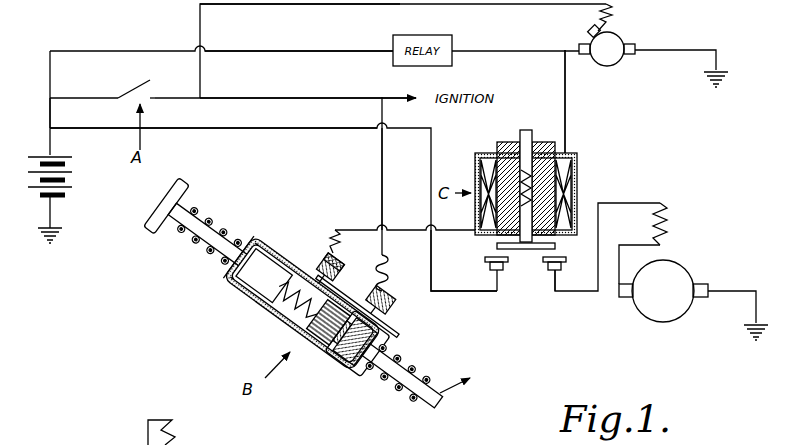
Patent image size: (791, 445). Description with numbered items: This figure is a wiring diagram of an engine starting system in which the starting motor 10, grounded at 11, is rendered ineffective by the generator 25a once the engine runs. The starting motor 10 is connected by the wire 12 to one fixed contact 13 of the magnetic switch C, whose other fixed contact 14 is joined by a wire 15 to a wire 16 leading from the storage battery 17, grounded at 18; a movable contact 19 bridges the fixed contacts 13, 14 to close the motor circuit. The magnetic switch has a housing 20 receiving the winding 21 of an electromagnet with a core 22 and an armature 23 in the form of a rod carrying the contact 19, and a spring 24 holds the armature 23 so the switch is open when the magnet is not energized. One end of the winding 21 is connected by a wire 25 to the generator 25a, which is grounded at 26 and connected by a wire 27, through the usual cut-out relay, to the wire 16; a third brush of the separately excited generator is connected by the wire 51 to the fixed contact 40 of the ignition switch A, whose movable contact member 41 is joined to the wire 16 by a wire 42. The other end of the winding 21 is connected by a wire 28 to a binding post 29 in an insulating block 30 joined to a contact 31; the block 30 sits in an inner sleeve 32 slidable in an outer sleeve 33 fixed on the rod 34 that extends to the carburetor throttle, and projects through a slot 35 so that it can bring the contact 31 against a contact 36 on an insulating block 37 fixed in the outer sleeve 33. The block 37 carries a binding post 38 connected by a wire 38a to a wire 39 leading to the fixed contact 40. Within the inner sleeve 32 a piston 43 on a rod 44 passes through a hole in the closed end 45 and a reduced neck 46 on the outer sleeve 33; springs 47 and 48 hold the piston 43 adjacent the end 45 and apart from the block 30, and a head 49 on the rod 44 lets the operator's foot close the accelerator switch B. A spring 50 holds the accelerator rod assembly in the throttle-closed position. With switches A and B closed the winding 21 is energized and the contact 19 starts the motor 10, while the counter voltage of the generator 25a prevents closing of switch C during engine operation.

The starting motor 10 is at (673, 320).
The ground connection 11 is at (738, 291).
The wire 12 is at (643, 203).
The fixed contact 13 is at (553, 275).
The fixed contact 14 is at (503, 275).
The wire 15 is at (274, 128).
The wire 16 is at (50, 117).
The storage battery 17 is at (72, 187).
The ground connection 18 is at (50, 215).
The movable contact 19 is at (557, 251).
The housing 20 is at (577, 175).
The winding 21 is at (485, 172).
The core 22 is at (543, 142).
The armature 23 is at (520, 133).
The spring 24 is at (520, 178).
The wire 25 is at (565, 134).
The generator 25a is at (618, 62).
The ground connection 26 is at (716, 62).
The wire 27 is at (328, 51).
The wire 28 is at (347, 229).
The binding post 29 is at (340, 258).
The block of insulating material 30 is at (323, 258).
The contact 31 is at (322, 347).
The inner sleeve 32 is at (288, 257).
The outer sleeve 33 is at (262, 314).
The rod 34 is at (402, 380).
The slot 35 is at (355, 298).
The contact 36 is at (327, 367).
The insulating block 37 is at (343, 377).
The binding post 38 is at (391, 299).
The wire 38a is at (382, 173).
The wire 39 is at (339, 97).
The fixed contact 40 is at (157, 98).
The movable contact member 41 is at (130, 90).
The wire 42 is at (72, 98).
The piston 43 is at (247, 282).
The rod 44 is at (173, 218).
The closed end 45 is at (241, 262).
The reduced neck 46 is at (210, 253).
The spring 47 is at (263, 312).
The spring 48 is at (213, 210).
The head 49 is at (143, 228).
The spring 50 is at (420, 358).
The wire 51 is at (250, 5).